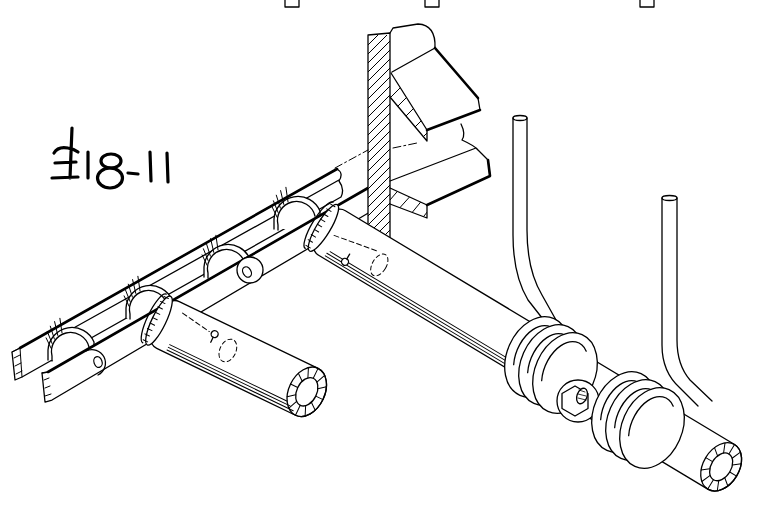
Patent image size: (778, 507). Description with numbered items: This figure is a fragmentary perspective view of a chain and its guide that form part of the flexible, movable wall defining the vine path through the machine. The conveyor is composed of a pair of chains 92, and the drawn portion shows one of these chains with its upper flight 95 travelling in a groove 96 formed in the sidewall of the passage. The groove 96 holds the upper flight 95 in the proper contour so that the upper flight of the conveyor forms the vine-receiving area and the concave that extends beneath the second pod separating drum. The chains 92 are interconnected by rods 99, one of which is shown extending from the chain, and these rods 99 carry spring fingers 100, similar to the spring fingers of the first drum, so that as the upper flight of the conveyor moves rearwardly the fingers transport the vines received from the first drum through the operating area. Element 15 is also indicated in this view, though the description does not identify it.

The wall panel 15 is at (405, 48).
The chains 92 is at (100, 303).
The upper flights 95 is at (287, 257).
The grooves 96 is at (442, 189).
The rods 99 is at (283, 352).
The spring fingers 100 is at (662, 255).